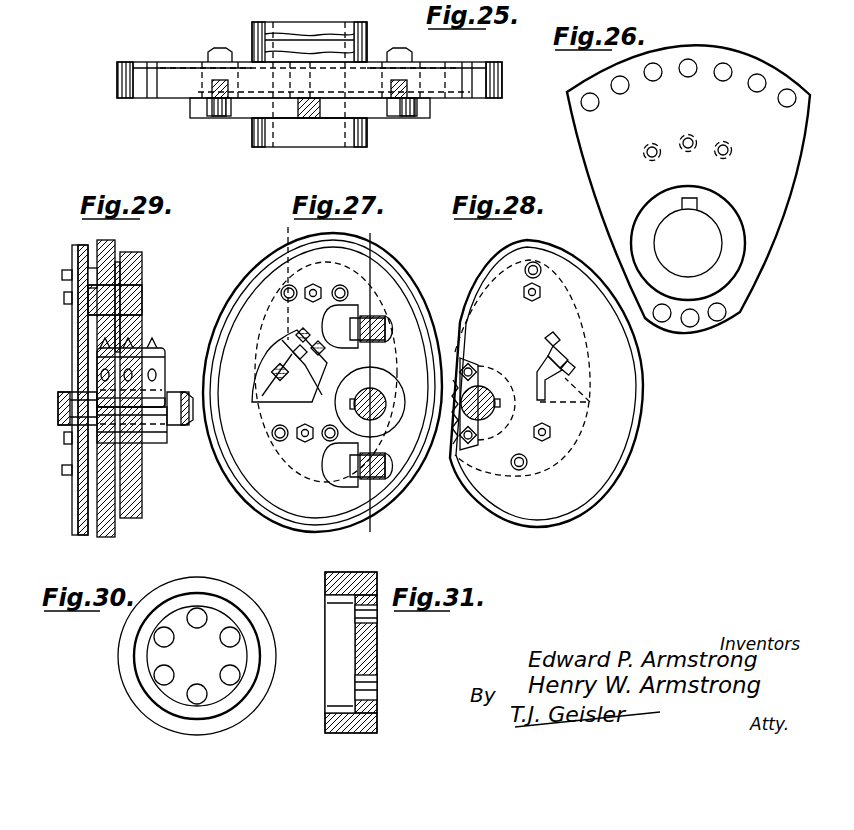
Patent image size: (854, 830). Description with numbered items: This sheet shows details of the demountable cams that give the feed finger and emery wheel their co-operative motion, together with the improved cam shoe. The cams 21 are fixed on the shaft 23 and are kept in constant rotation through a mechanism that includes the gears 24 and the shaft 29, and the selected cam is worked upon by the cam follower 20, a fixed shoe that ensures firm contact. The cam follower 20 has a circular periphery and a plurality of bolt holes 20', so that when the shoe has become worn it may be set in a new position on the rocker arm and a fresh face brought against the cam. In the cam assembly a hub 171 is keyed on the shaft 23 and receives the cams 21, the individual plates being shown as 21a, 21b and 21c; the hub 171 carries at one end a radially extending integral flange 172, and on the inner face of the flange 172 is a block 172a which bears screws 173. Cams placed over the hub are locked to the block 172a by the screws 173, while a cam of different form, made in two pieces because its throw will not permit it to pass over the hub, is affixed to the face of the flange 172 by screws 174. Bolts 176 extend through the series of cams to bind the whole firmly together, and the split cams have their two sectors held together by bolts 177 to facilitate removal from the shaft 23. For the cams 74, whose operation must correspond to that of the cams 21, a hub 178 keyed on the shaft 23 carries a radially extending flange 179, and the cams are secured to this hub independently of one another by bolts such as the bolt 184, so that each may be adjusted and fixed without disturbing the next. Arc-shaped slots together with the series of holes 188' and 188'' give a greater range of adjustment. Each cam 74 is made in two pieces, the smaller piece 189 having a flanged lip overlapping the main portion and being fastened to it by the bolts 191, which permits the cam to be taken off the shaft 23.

In FIG. 30, the cam follower 20 is at (209, 656).
In FIG. 31, the cam follower 20 is at (330, 652).
In FIG. 30, the bolt holes 20' is at (160, 661).
In FIG. 31, the bolt holes 20' is at (379, 652).
In FIG. 29, the cams 21 is at (147, 285).
In FIG. 29, the outer plate 21a is at (78, 245).
In FIG. 27, the outer plate 21a is at (230, 495).
In FIG. 28, the outer plate 21a is at (630, 432).
In FIG. 29, the middle plate 21b is at (113, 242).
In FIG. 27, the middle plate 21b is at (237, 475).
In FIG. 29, the inner plate 21c is at (142, 256).
In FIG. 27, the inner plate 21c is at (272, 490).
In FIG. 29, the shaft 23 is at (178, 427).
In FIG. 27, the shaft 23 is at (373, 410).
In FIG. 28, the shaft 23 is at (470, 432).
In FIG. 25, the gear 24 is at (237, 10).
In FIG. 27, the shaft 29 is at (315, 227).
In FIG. 25, the cams 74 is at (163, 88).
In FIG. 29, the hub 171 is at (145, 437).
In FIG. 27, the hub 171 is at (370, 402).
In FIG. 29, the flange 172 is at (92, 342).
In FIG. 27, the flange 172 is at (305, 480).
In FIG. 28, the flange 172 is at (553, 472).
In FIG. 29, the block 172a is at (157, 388).
In FIG. 27, the block 172a is at (289, 366).
In FIG. 28, the block 172a is at (567, 352).
In FIG. 29, the screws 173 is at (145, 340).
In FIG. 27, the screws 173 is at (280, 372).
In FIG. 29, the screws 174 is at (73, 470).
In FIG. 28, the screws 174 is at (518, 470).
In FIG. 29, the bolts 176 is at (68, 438).
In FIG. 27, the bolts 176 is at (303, 440).
In FIG. 28, the bolts 176 is at (527, 288).
In FIG. 27, the bolts 177 is at (357, 396).
In FIG. 25, the hub 178 is at (368, 60).
In FIG. 26, the hub 178 is at (725, 257).
In FIG. 25, the flange 179 is at (363, 108).
In FIG. 26, the flange 179 is at (760, 182).
In FIG. 25, the bolt 184 is at (308, 60).
In FIG. 26, the series of holes 188' is at (688, 89).
In FIG. 26, the series of holes 188'' is at (688, 158).
In FIG. 25, the smaller piece 189 is at (258, 72).
In FIG. 25, the bolts 191 is at (417, 110).